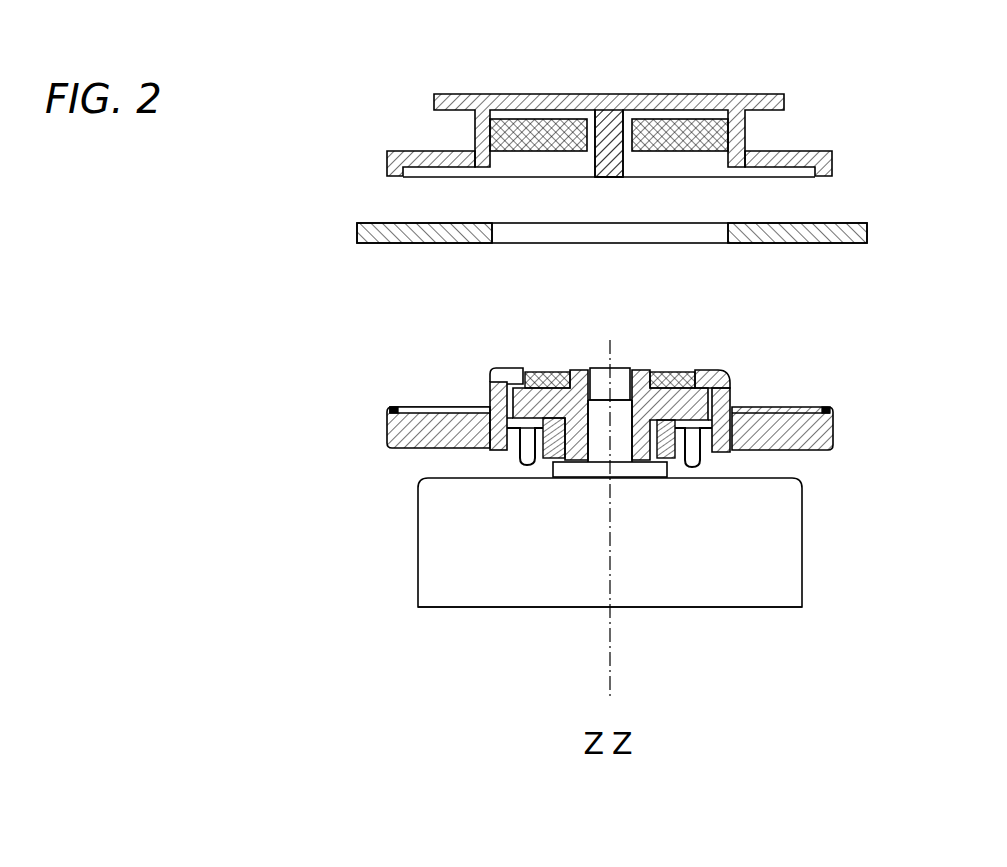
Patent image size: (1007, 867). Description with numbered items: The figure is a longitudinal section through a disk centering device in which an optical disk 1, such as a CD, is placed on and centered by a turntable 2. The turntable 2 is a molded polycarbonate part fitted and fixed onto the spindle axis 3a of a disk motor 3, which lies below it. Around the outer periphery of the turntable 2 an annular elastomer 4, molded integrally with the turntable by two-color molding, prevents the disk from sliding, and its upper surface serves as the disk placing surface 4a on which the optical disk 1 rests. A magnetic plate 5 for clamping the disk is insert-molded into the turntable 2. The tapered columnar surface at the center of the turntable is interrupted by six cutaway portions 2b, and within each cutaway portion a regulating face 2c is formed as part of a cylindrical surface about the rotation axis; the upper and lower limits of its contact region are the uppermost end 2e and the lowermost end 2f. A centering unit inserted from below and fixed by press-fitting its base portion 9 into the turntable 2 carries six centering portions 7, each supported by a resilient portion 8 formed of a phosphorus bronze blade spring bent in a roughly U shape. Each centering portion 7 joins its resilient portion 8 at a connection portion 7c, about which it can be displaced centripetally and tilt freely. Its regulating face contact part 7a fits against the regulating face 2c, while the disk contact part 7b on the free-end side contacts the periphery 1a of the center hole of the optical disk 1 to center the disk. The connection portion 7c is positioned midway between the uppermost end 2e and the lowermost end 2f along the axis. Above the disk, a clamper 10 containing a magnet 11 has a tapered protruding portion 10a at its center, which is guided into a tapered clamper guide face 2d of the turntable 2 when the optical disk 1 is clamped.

The optical disk 1 is at (370, 223).
The periphery of the center hole 1a is at (493, 243).
The turntable 2 is at (435, 407).
The cutaway portion 2b is at (505, 453).
The regulating face 2c is at (490, 448).
The clamper guide face 2d is at (645, 368).
The uppermost end of the regulating face 2e is at (490, 405).
The lowermost end of the regulating face 2f is at (497, 450).
The disk motor 3 is at (447, 582).
The spindle axis 3a is at (485, 578).
The elastomer 4 is at (396, 407).
The disk placing surface 4a is at (390, 407).
The magnetic plate 5 is at (712, 373).
The centering portion 7 is at (733, 455).
The regulating face contact part 7a is at (760, 442).
The disk contact part 7b is at (722, 394).
The connection portion 7c is at (727, 450).
The resilient portion 8 is at (686, 462).
The base portion 9 is at (668, 462).
The clamper 10 is at (388, 152).
The protruding portion 10a is at (652, 177).
The magnet 11 is at (743, 127).